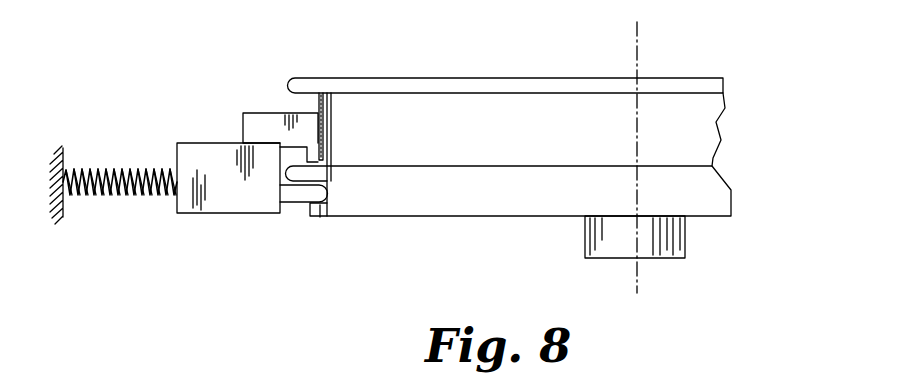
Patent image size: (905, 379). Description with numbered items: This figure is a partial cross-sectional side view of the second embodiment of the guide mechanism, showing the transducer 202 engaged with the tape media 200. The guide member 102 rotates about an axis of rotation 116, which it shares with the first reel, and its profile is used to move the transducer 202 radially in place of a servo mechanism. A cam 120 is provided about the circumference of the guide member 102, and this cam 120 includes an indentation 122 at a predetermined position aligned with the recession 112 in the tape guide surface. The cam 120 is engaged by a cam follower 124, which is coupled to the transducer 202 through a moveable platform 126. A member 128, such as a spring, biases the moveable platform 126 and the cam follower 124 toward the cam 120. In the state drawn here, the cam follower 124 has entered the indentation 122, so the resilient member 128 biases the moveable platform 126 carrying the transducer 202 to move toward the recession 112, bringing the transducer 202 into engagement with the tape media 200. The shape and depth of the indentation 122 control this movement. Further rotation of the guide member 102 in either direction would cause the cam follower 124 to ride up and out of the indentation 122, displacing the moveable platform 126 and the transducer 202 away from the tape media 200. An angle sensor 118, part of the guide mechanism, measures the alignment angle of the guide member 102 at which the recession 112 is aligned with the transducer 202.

The guide member 102 is at (492, 78).
The recession 112 is at (333, 103).
The axis of rotation 116 is at (640, 38).
The angle sensor 118 is at (672, 243).
The cam 120 is at (400, 207).
The indentation 122 is at (320, 217).
The cam follower 124 is at (297, 196).
The moveable platform 126 is at (220, 212).
The member 128 is at (123, 167).
The tape media 200 is at (310, 107).
The transducer 202 is at (247, 127).